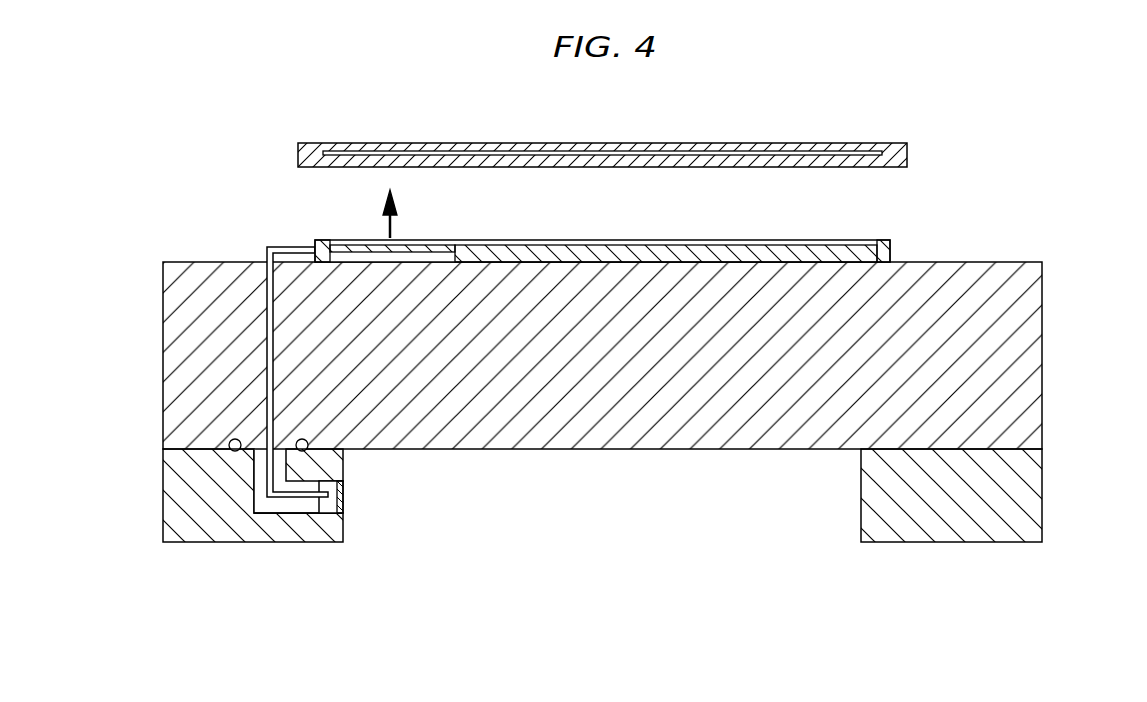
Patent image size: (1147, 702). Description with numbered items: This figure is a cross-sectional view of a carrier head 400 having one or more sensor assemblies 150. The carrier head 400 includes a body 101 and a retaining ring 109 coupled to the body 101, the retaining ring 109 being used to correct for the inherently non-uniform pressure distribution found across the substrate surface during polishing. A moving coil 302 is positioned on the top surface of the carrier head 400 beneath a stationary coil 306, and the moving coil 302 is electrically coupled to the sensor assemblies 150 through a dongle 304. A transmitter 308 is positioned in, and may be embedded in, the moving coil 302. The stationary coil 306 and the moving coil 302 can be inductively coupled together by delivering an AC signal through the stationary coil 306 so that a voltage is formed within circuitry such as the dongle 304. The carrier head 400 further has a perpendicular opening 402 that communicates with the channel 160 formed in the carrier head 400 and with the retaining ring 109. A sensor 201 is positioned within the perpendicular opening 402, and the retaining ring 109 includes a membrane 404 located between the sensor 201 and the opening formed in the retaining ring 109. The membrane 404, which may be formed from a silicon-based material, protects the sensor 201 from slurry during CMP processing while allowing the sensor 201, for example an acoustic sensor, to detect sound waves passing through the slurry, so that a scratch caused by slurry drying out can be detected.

The body 101 is at (1043, 338).
The retaining ring 109 is at (1043, 489).
The sensor assembly 150 is at (323, 515).
The channel 160 is at (258, 476).
The sensor 201 is at (328, 478).
The moving coil 302 is at (887, 239).
The dongle 304 is at (288, 247).
The stationary coil 306 is at (892, 142).
The transmitter 308 is at (392, 226).
The carrier head 400 is at (982, 212).
The perpendicular opening 402 is at (278, 515).
The membrane 404 is at (345, 493).